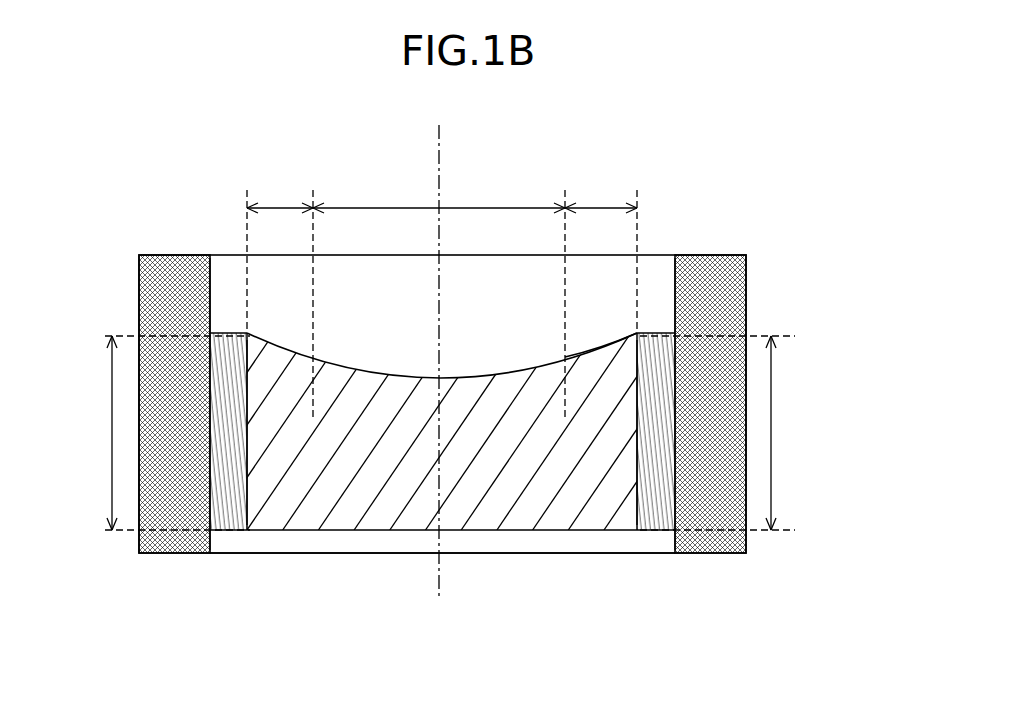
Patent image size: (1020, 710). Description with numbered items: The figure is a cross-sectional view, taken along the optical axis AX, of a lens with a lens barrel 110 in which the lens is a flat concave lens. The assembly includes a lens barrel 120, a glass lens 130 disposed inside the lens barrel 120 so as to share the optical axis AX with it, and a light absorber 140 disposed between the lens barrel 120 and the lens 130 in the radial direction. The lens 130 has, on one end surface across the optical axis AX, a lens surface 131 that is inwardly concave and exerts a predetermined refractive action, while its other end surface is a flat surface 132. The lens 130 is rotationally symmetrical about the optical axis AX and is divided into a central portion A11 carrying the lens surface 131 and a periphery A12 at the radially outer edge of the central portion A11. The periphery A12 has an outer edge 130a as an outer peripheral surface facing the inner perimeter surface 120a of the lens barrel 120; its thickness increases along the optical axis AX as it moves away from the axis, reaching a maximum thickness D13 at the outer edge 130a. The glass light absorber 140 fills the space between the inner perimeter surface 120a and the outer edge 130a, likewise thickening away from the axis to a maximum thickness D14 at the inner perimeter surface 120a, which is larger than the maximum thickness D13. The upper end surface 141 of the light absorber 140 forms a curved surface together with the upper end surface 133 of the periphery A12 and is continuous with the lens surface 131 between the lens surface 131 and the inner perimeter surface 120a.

The lens with the lens barrel 110 is at (777, 583).
The lens barrel 120 is at (172, 515).
The inner perimeter surface 120a is at (210, 307).
The lens 130 is at (358, 487).
The outer edge 130a is at (238, 418).
The lens surface 131 is at (383, 372).
The flat surface 132 is at (478, 531).
The upper end surface of the periphery 133 is at (603, 353).
The light absorber 140 is at (228, 518).
The upper end surface of the light absorber 141 is at (227, 333).
The optical axis AX is at (437, 162).
The central portion A11 is at (439, 192).
The periphery A12 is at (442, 192).
The maximum thickness of the periphery D13 is at (86, 433).
The maximum thickness of the light absorber D14 is at (797, 433).